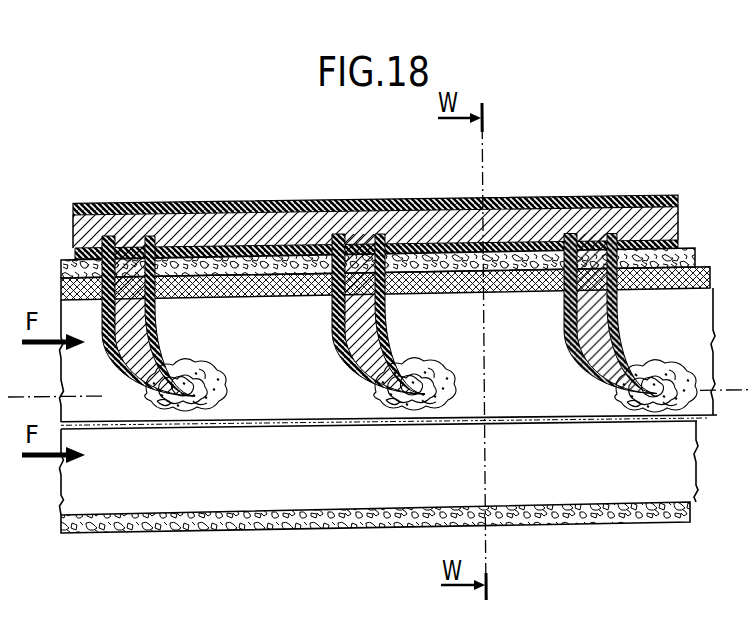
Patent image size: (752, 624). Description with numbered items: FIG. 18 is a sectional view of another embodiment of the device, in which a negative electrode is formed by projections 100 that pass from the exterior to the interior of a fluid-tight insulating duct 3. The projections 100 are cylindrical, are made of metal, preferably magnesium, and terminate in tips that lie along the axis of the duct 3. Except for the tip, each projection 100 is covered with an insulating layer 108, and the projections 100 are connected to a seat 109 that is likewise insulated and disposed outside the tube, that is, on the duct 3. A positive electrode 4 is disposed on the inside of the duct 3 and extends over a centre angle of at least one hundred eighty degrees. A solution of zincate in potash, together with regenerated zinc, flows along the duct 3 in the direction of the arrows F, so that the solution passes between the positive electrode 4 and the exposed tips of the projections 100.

The fluid-tight insulating duct 3 is at (240, 283).
The positive electrode 4 is at (303, 280).
The projections 100 is at (348, 370).
The insulating layer 108 is at (205, 203).
The seat 109 is at (287, 227).